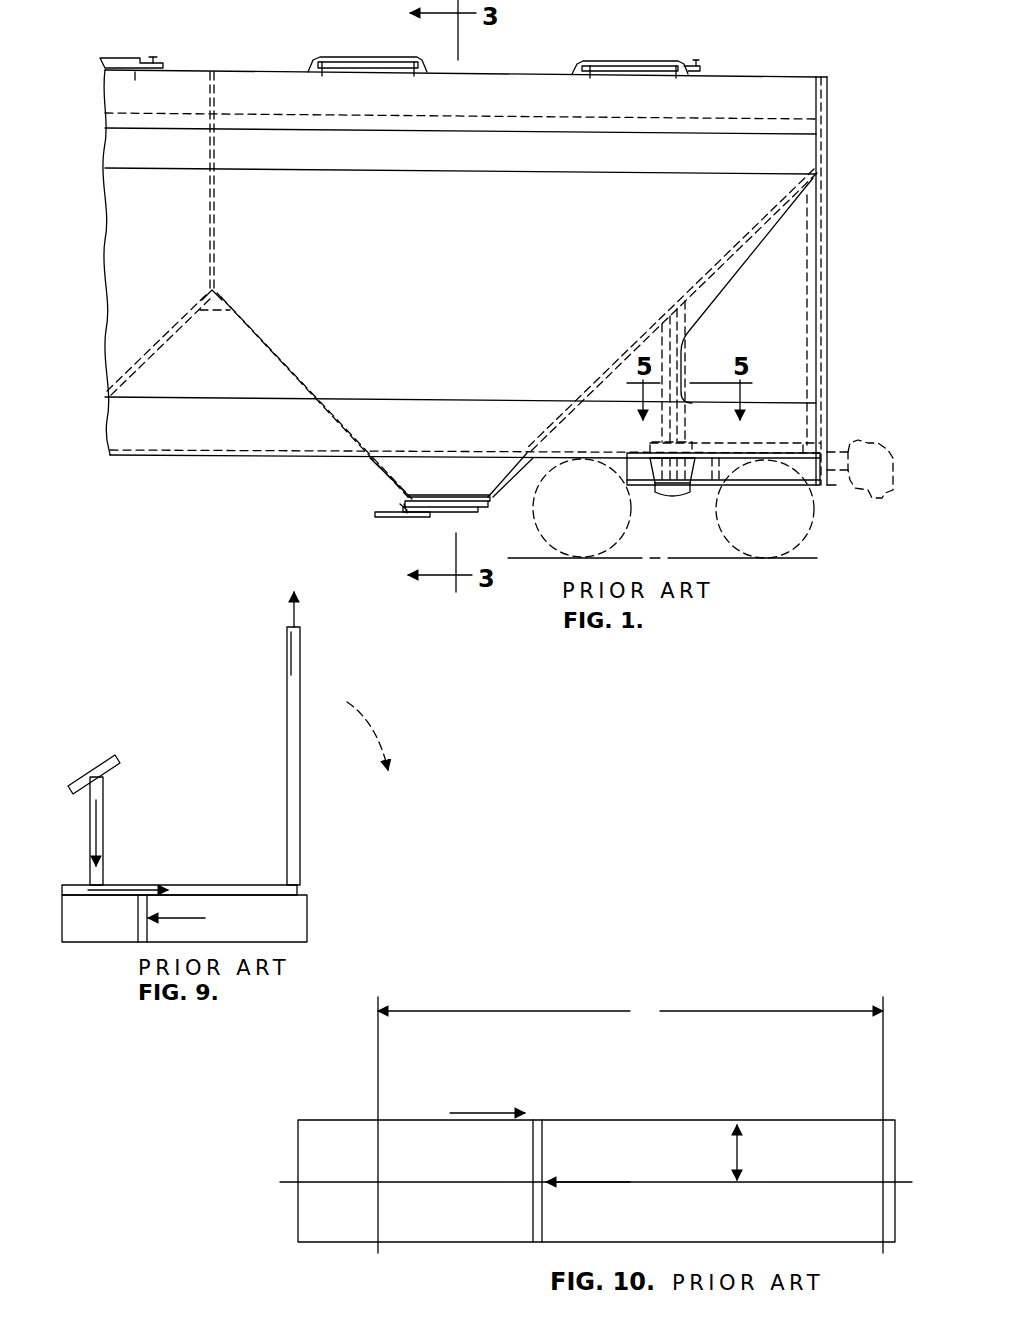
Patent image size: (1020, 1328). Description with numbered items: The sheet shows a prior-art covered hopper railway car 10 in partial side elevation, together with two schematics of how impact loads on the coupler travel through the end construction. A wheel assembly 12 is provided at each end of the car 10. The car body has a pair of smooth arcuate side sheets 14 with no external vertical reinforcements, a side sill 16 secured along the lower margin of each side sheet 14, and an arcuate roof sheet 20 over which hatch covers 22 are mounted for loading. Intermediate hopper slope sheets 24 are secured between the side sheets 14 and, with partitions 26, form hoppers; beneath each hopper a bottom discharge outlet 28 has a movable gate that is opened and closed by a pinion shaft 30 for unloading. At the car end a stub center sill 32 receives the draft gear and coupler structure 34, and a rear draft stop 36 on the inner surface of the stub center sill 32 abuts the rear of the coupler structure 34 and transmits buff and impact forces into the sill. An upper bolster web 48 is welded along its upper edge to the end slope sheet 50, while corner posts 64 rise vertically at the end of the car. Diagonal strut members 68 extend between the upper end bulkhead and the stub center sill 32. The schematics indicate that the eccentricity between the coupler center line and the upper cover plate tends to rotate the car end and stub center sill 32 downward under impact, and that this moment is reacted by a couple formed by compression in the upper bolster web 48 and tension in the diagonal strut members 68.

In FIG. 1, the covered hopper railway car 10 is at (756, 66).
In FIG. 1, the wheel assembly 12 is at (774, 564).
In FIG. 1, the arcuate side sheet 14 is at (484, 297).
In FIG. 1, the side sill 16 is at (208, 438).
In FIG. 1, the arcuate roof sheet 20 is at (243, 80).
In FIG. 1, the hatch cover 22 is at (645, 62).
In FIG. 1, the intermediate hopper slope sheet 24 is at (160, 336).
In FIG. 1, the partition 26 is at (216, 206).
In FIG. 1, the bottom discharge outlet 28 is at (410, 516).
In FIG. 1, the pinion shaft 30 is at (398, 508).
In FIG. 1, the stub center sill 32 is at (703, 480).
In FIG. 9, the stub center sill 32 is at (285, 940).
In FIG. 10, the stub center sill 32 is at (832, 1238).
In FIG. 1, the draft gear and coupler structure 34 is at (866, 497).
In FIG. 9, the rear draft stop 36 is at (138, 932).
In FIG. 10, the rear draft stop 36 is at (561, 1181).
In FIG. 9, the upper bolster web 48 is at (105, 818).
In FIG. 10, the upper bolster web 48 is at (378, 1062).
In FIG. 1, the end slope sheet 50 is at (729, 251).
In FIG. 1, the corner post 64 is at (830, 212).
In FIG. 1, the diagonal strut member 68 is at (807, 300).
In FIG. 9, the diagonal strut member 68 is at (300, 778).
In FIG. 10, the diagonal strut member 68 is at (883, 1090).